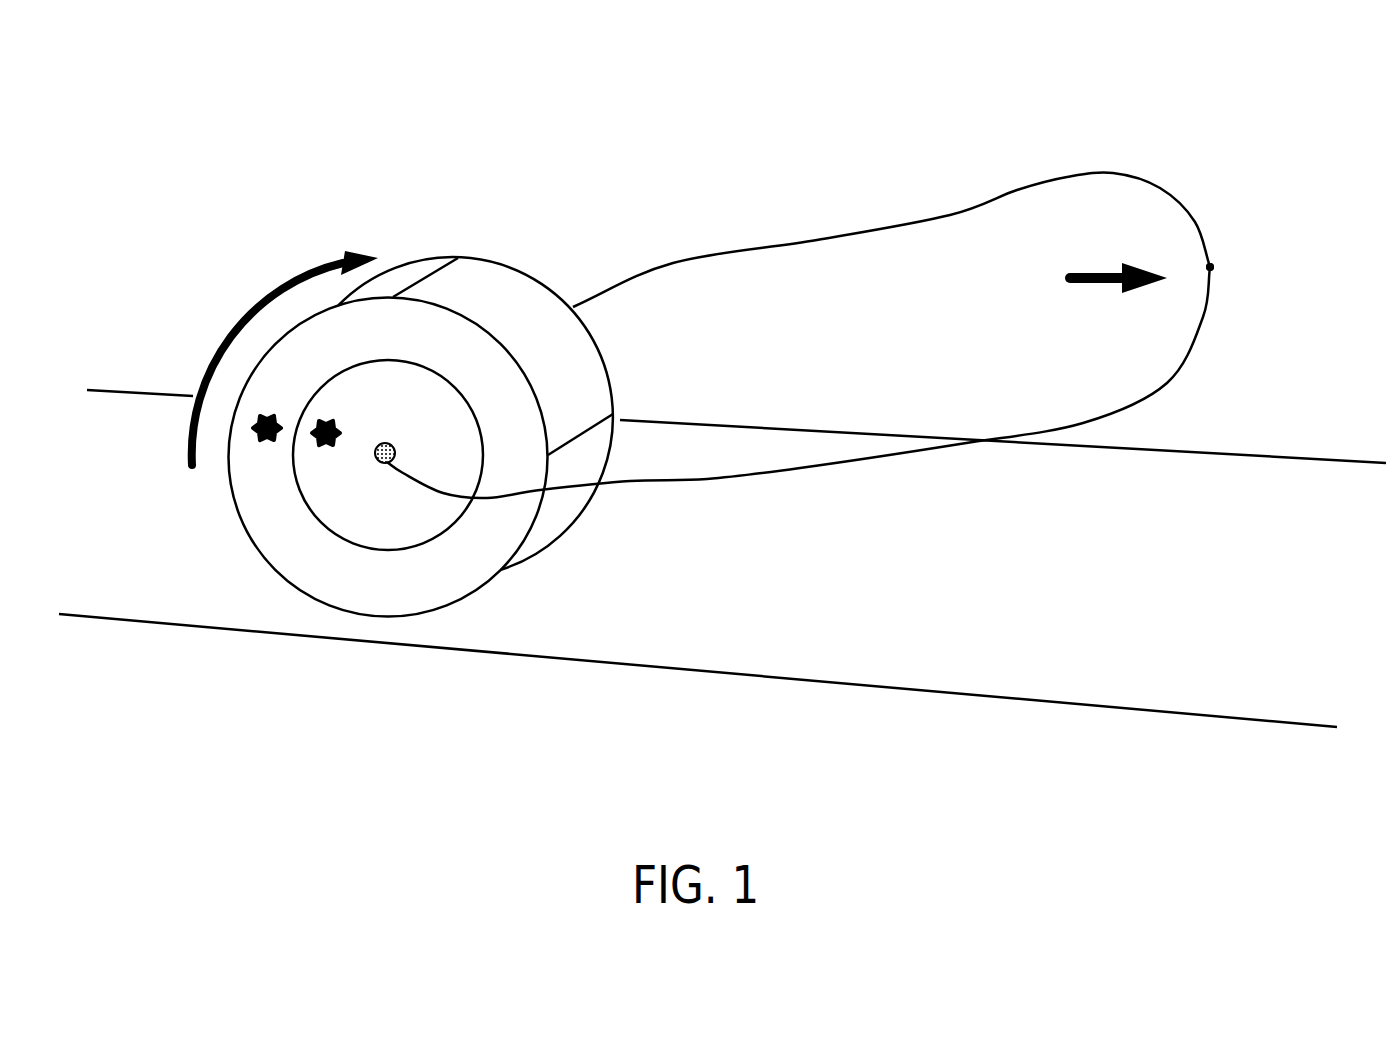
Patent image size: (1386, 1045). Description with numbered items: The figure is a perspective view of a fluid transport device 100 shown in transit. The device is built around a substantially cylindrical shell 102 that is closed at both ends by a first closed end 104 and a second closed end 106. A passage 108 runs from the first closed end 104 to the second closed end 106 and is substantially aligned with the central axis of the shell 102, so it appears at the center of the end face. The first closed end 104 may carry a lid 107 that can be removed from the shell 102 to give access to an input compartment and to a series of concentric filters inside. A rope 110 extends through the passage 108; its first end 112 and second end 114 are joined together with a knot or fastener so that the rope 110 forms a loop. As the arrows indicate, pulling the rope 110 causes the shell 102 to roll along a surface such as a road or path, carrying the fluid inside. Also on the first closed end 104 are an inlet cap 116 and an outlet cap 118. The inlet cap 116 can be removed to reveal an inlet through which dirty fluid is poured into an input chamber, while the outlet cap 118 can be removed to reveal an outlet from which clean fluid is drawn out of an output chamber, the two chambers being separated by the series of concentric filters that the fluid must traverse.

The fluid transport device 100 is at (290, 85).
The substantially cylindrical shell 102 is at (577, 356).
The first closed end 104 is at (285, 568).
The second closed end 106 is at (552, 288).
The lid 107 is at (418, 538).
The passage 108 is at (392, 440).
The rope 110 is at (818, 241).
The first end of the rope 112 is at (1213, 270).
The second end of the rope 114 is at (1212, 265).
The inlet cap 116 is at (329, 421).
The outlet cap 118 is at (263, 413).